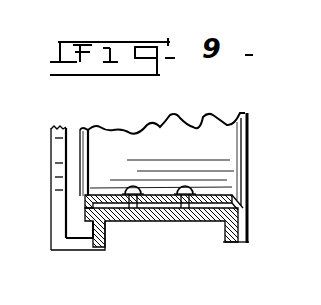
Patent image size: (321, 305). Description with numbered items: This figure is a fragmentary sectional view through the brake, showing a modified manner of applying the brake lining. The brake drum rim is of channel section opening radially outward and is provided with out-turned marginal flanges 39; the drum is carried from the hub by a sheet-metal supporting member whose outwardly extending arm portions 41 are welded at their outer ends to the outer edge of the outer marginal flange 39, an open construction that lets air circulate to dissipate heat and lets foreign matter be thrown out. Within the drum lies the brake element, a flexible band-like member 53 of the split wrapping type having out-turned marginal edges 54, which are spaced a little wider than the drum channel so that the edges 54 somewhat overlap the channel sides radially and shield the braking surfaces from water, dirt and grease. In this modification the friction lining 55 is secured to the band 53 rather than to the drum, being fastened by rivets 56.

The arm portion 41 is at (60, 150).
The flexible band-like member 53 is at (87, 195).
The out-turned marginal edge 54 is at (85, 223).
The out-turned marginal flange 39 is at (96, 247).
The friction lining 55 is at (126, 222).
The rivet 56 is at (187, 205).